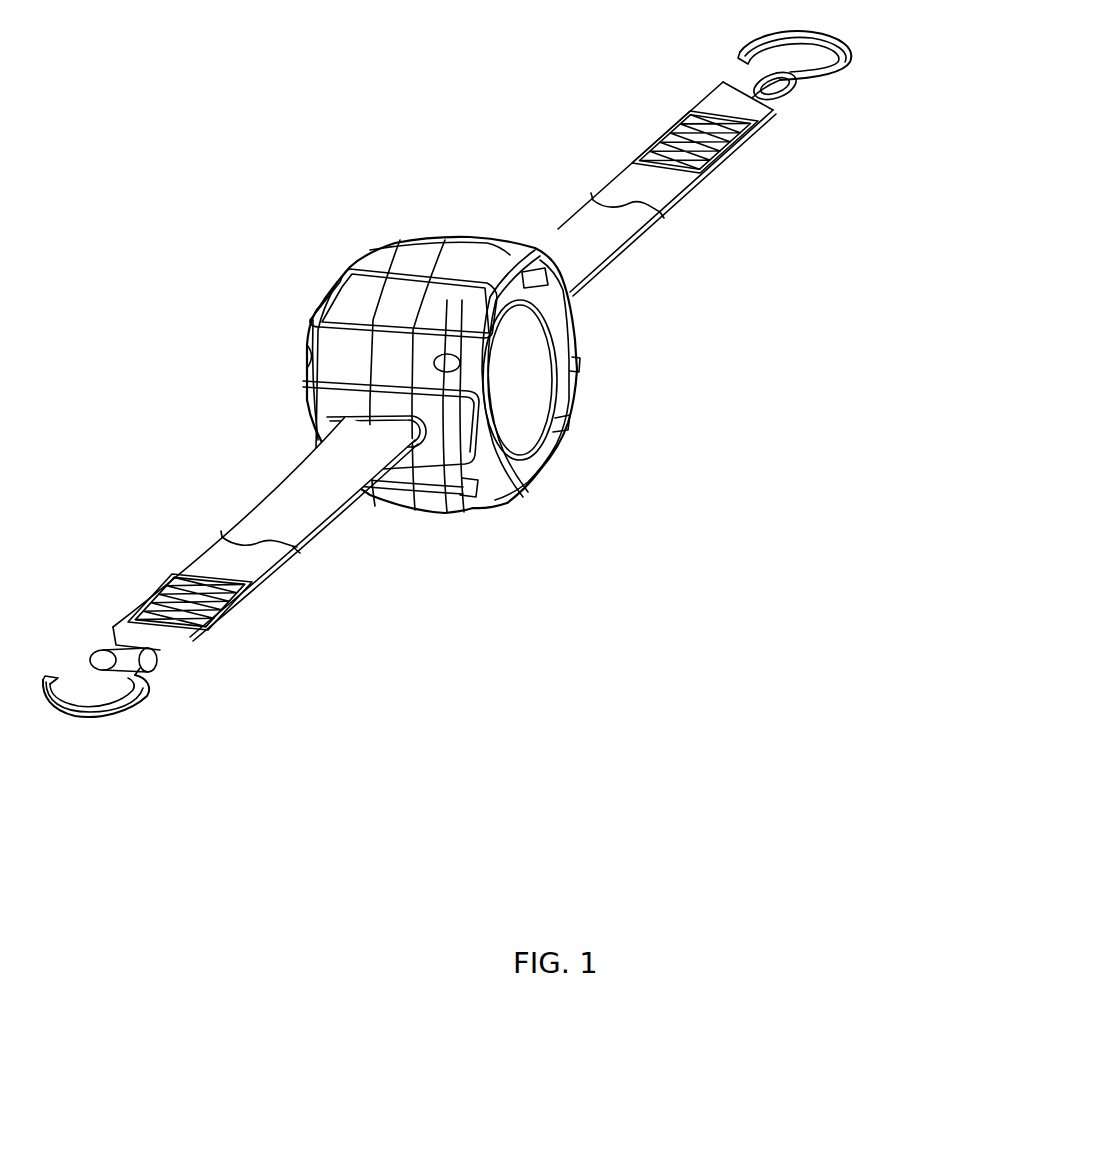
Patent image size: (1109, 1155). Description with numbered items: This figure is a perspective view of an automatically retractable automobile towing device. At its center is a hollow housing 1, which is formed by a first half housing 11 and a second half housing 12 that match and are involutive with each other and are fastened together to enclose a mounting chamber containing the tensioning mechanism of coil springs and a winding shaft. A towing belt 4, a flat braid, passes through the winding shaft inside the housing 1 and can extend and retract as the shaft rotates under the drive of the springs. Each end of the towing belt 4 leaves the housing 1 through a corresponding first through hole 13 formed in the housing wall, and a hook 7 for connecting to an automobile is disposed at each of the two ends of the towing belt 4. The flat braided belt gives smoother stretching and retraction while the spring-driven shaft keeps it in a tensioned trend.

The housing 1 is at (284, 258).
The towing belt 4 is at (686, 184).
The hook 7 is at (848, 55).
The first half housing 11 is at (393, 245).
The second half housing 12 is at (537, 463).
The first through hole 13 is at (447, 462).